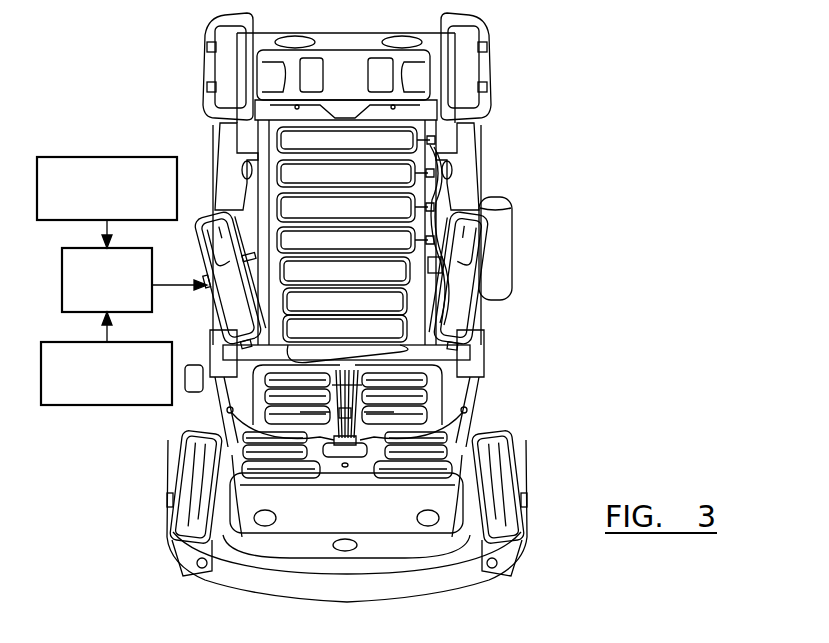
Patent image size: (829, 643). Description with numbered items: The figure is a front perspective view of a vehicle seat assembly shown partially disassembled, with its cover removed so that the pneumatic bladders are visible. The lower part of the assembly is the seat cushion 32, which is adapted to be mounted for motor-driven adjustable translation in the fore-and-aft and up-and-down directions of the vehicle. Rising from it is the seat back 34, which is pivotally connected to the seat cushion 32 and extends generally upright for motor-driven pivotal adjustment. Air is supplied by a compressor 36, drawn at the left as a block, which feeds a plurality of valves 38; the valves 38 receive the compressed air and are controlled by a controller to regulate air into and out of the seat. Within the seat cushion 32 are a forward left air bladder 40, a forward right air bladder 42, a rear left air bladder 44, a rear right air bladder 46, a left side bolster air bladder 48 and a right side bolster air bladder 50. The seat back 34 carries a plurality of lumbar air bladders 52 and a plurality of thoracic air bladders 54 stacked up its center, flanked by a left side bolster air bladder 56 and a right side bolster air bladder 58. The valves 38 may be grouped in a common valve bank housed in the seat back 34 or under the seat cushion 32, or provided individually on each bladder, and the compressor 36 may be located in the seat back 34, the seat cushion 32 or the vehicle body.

The seat cushion 32 is at (172, 553).
The seat back 34 is at (473, 168).
The compressor 36 is at (107, 202).
The valves 38 is at (134, 280).
The forward left air bladder 40 is at (397, 470).
The forward right air bladder 42 is at (296, 470).
The rear left air bladder 44 is at (425, 396).
The rear right air bladder 46 is at (280, 396).
The left side bolster air bladder 48 is at (508, 512).
The right side bolster air bladder 50 is at (185, 518).
The lumbar air bladders 52 is at (445, 325).
The thoracic air bladders 54 is at (290, 170).
The left side bolster air bladder 56 is at (457, 272).
The right side bolster air bladder 58 is at (232, 270).